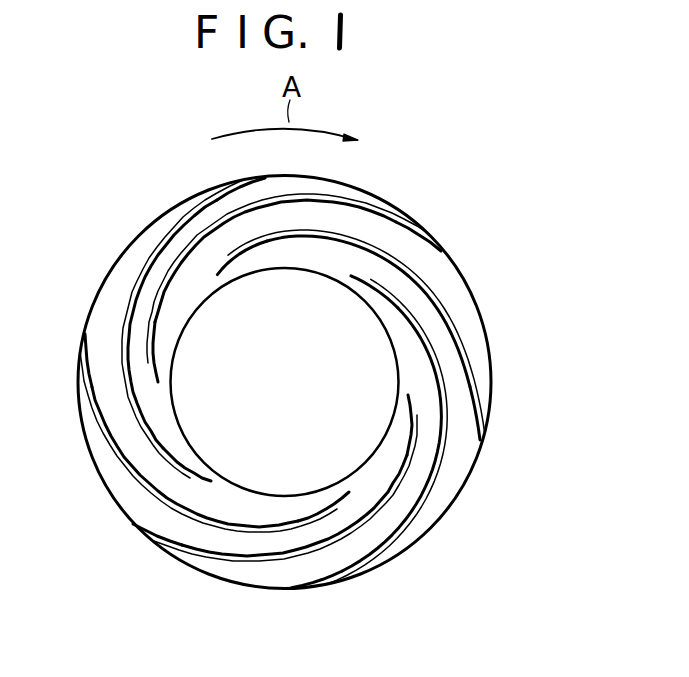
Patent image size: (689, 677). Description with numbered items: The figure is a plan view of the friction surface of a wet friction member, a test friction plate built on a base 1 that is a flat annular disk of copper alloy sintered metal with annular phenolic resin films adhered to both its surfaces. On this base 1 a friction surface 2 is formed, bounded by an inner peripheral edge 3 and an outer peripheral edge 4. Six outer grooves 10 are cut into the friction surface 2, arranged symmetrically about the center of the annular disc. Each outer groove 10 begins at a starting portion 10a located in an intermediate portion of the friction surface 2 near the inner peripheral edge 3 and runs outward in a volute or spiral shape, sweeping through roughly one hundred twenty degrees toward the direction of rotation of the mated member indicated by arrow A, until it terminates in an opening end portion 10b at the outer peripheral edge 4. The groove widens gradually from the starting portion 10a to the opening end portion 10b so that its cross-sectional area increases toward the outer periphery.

The base 1 is at (578, 325).
The friction surface 2 is at (115, 419).
The inner peripheral edge 3 is at (286, 497).
The outer peripheral edge 4 is at (113, 500).
The outer groove 10 is at (430, 291).
The starting portion 10a is at (352, 277).
The opening end portion 10b is at (488, 421).